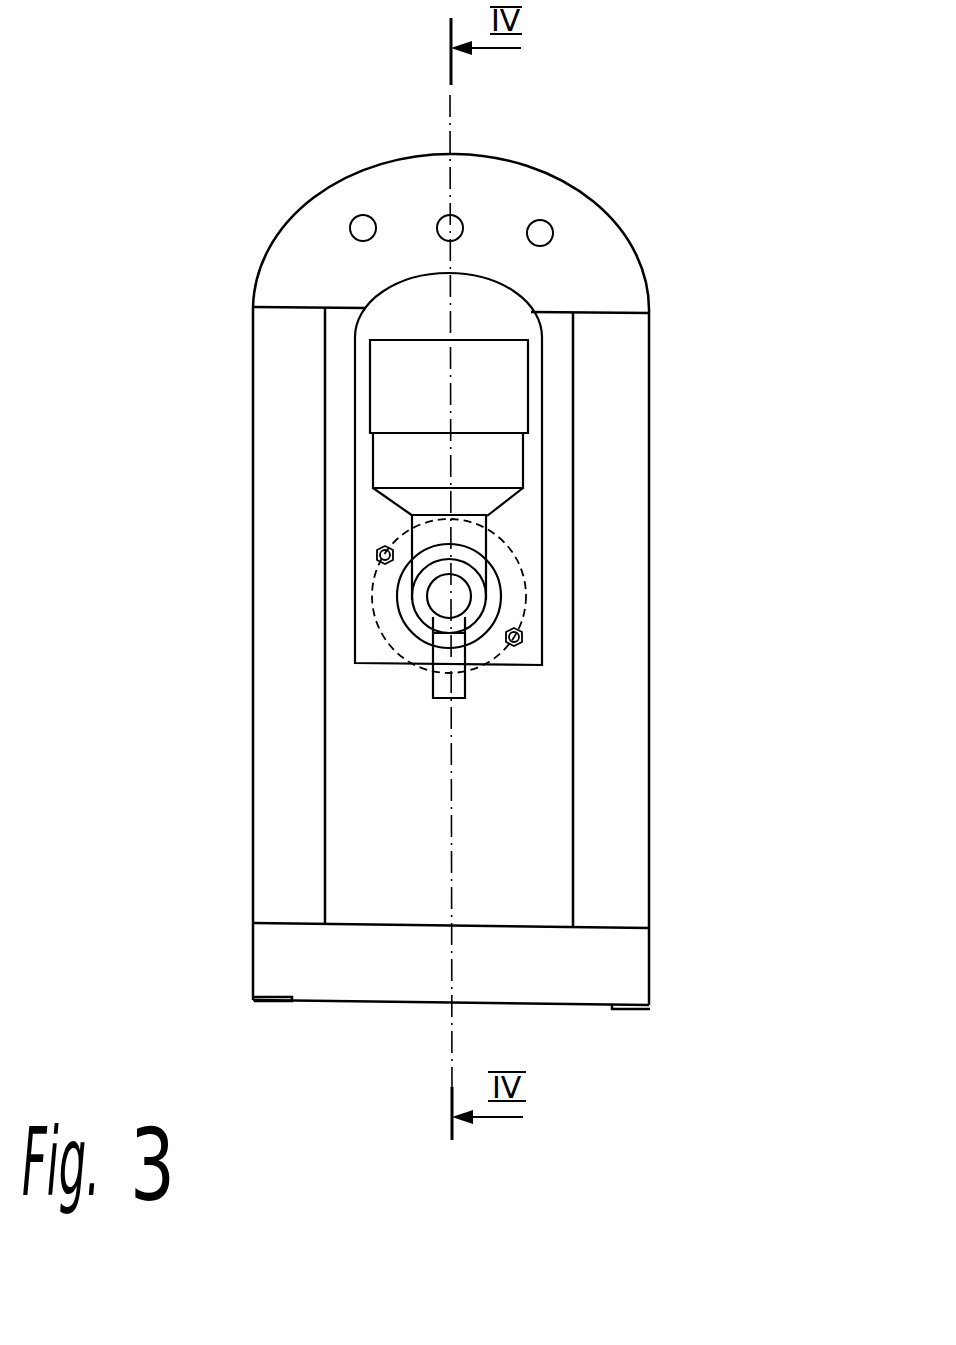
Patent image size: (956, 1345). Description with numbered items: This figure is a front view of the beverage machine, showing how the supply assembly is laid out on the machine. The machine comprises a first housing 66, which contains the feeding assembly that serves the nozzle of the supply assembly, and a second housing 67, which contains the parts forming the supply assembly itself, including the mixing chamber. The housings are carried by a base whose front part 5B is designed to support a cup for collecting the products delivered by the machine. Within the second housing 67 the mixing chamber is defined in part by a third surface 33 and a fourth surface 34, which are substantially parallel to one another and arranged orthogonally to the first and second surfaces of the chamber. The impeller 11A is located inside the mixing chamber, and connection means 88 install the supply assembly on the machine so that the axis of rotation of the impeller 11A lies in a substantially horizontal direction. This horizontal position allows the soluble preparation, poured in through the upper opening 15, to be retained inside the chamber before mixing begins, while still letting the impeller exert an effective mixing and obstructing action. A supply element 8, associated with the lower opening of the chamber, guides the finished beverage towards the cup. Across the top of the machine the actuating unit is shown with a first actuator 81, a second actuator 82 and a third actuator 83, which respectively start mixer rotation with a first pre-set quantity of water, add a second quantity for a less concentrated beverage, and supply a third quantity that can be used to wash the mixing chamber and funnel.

The front part 5B is at (330, 978).
The supply element 8 is at (462, 691).
The impeller 11A is at (477, 597).
The upper opening 15 is at (462, 512).
The third surface 33 is at (405, 592).
The fourth surface 34 is at (487, 552).
The first housing 66 is at (277, 769).
The second housing 67 is at (536, 378).
The first actuator 81 is at (358, 222).
The second actuator 82 is at (461, 223).
The third actuator 83 is at (547, 228).
The connection means 88 is at (377, 552).